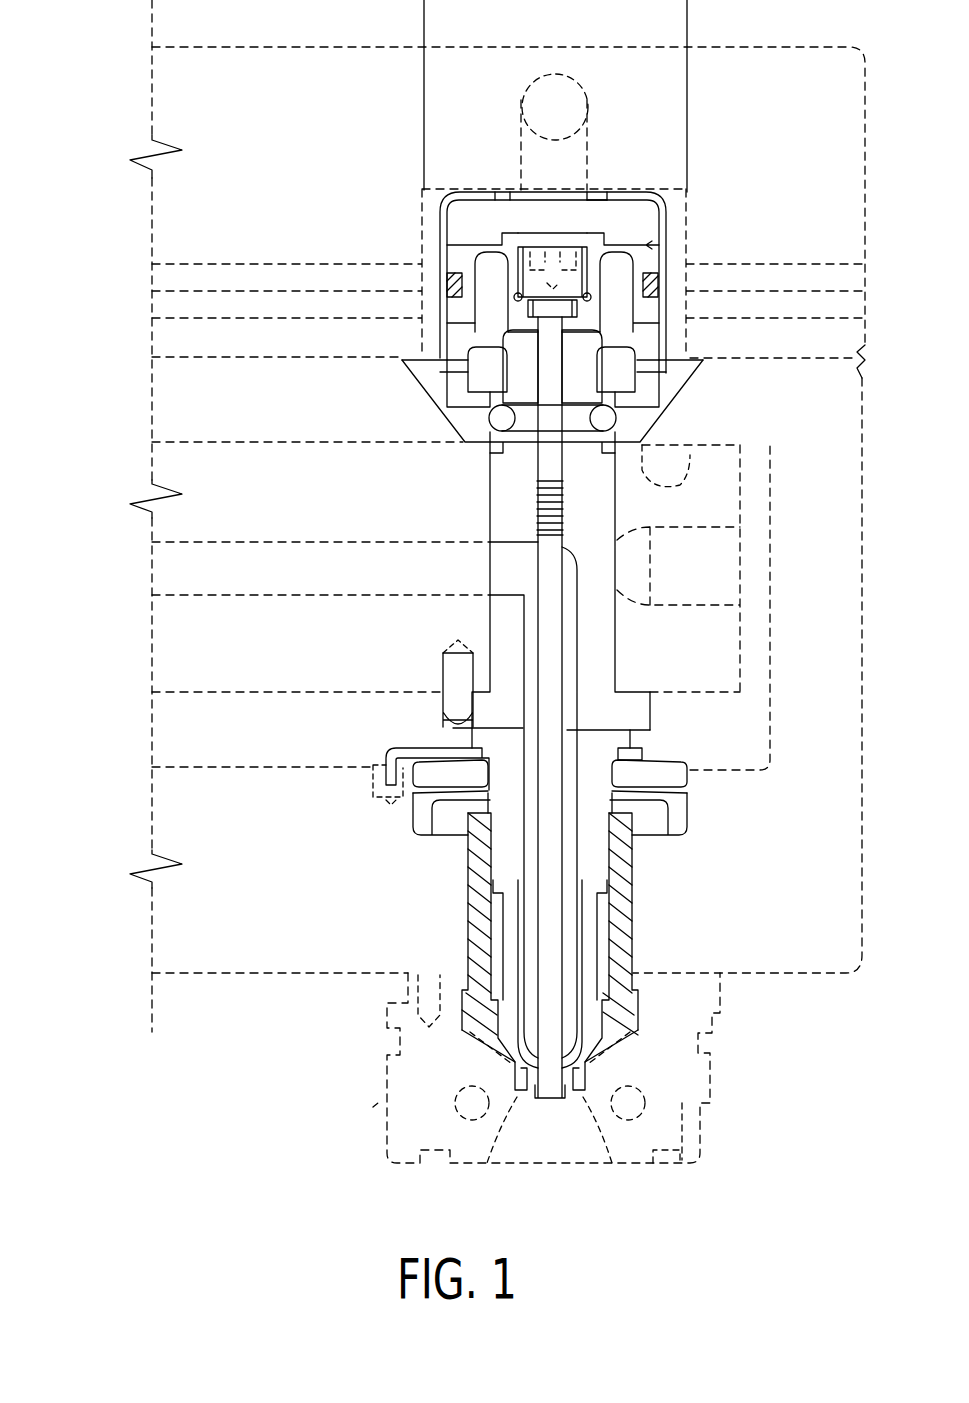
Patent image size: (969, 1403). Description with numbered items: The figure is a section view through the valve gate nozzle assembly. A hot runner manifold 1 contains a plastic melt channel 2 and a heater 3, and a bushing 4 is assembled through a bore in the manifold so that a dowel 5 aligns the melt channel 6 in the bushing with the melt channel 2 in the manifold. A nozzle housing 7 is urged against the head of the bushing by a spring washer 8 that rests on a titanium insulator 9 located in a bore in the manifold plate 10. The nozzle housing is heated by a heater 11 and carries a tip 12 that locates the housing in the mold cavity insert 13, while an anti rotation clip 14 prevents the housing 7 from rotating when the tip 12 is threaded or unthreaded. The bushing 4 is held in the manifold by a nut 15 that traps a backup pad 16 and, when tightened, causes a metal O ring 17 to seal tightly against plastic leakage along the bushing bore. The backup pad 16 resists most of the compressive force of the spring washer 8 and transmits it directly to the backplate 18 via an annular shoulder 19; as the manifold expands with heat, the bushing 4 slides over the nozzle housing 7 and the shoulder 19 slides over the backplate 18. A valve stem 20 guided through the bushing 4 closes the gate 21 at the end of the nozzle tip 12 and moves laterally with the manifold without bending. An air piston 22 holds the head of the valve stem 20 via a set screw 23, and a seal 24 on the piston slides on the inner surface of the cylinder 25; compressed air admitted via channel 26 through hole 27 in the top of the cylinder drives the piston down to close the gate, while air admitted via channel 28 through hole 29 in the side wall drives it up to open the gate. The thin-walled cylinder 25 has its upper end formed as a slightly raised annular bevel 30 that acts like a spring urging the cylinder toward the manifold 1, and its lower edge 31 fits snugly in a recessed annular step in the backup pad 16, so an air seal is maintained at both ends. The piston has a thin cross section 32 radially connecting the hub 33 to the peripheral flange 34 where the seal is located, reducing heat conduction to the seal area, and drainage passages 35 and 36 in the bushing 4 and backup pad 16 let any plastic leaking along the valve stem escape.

The hot runner manifold 1 is at (195, 478).
The plastic melt channel 2 is at (168, 578).
The heater 3 is at (752, 450).
The bushing 4 is at (631, 508).
The dowel 5 is at (458, 690).
The melt channel 6 is at (500, 582).
The nozzle housing 7 is at (647, 736).
The spring washer 8 is at (704, 778).
The titanium insulator 9 is at (696, 808).
The manifold plate 10 is at (232, 905).
The heater 11 is at (644, 910).
The tip 12 is at (618, 1048).
The mold cavity insert 13 is at (410, 1080).
The anti rotation clip 14 is at (660, 750).
The nut 15 is at (622, 372).
The backup pad 16 is at (712, 383).
The metal O ring 17 is at (634, 460).
The backplate 18 is at (215, 160).
The annular shoulder 19 is at (405, 362).
The valve stem 20 is at (552, 820).
The gate 21 is at (530, 1100).
The air piston 22 is at (648, 245).
The set screw 23 is at (606, 236).
The seal 24 is at (662, 284).
The cylinder 25 is at (684, 300).
The channel 26 is at (588, 98).
The hole 27 is at (598, 196).
The channel 28 is at (178, 295).
The hole 29 is at (443, 334).
The annular bevel 30 is at (486, 196).
The lower edge 31 is at (425, 390).
The thin cross section 32 is at (490, 244).
The hub 33 is at (512, 238).
The peripheral flange 34 is at (460, 270).
The drainage passage 35 is at (590, 416).
The drainage passage 36 is at (630, 434).